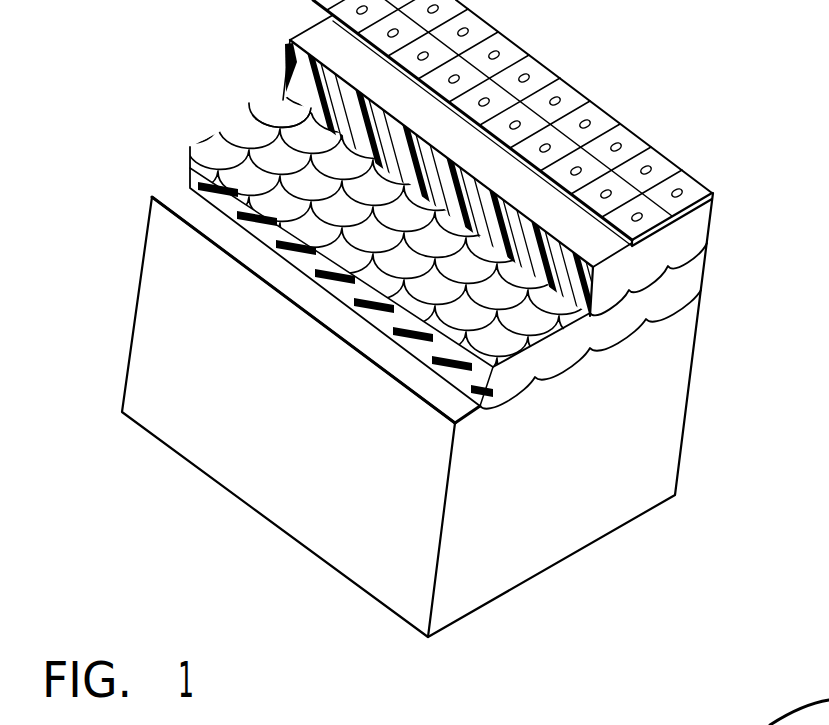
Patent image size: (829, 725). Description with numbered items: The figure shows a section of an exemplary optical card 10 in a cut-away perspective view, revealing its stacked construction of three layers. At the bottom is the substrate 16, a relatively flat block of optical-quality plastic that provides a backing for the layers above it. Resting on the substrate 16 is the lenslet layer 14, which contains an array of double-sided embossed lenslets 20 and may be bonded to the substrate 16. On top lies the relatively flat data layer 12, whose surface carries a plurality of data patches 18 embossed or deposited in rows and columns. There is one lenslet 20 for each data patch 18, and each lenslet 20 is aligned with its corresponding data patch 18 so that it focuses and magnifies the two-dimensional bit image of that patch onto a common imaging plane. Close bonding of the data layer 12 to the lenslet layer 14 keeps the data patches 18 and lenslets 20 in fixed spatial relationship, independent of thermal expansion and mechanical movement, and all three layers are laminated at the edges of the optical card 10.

The optical card 10 is at (436, 318).
The data layer 12 is at (515, 123).
The lenslet layer 14 is at (233, 113).
The substrate 16 is at (162, 280).
The data patches 18 is at (617, 147).
The lenslets 20 is at (270, 108).